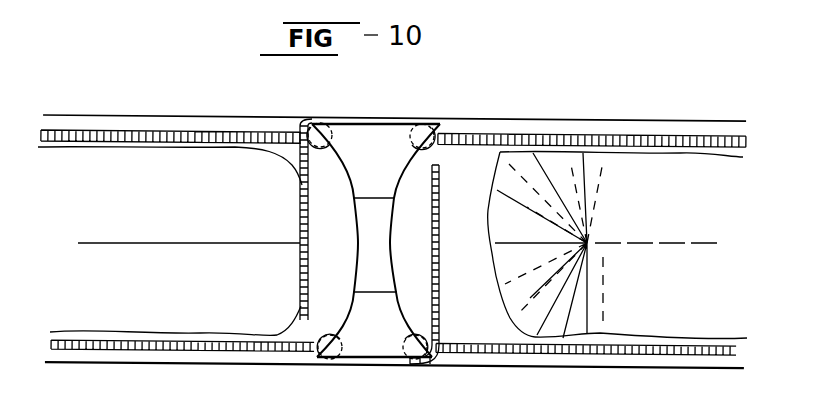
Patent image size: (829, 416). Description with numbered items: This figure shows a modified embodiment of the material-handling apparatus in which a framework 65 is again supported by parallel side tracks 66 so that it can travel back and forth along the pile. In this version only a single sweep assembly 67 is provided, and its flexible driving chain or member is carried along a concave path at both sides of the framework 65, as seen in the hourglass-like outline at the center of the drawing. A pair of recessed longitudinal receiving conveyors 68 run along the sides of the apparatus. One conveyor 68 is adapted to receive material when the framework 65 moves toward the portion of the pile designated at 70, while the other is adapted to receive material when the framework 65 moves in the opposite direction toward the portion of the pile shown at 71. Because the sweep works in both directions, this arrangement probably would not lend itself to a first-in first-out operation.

The framework 65 is at (382, 167).
The parallel side tracks 66 is at (263, 114).
The sweep assembly 67 is at (413, 320).
The recessed longitudinal receiving conveyors 68 is at (143, 146).
The portion of the pile 70 is at (246, 231).
The portion of the pile 71 is at (656, 236).